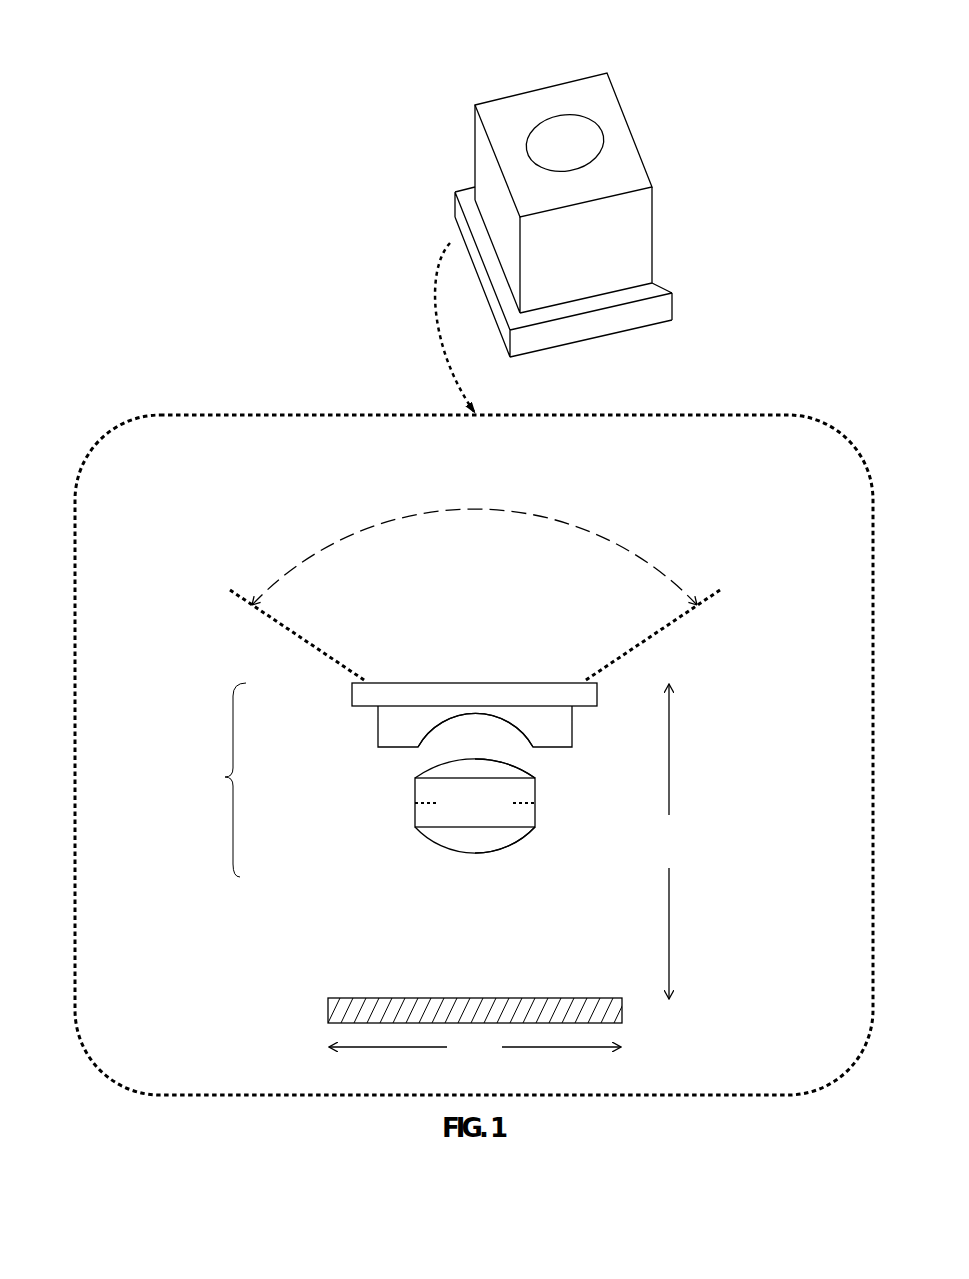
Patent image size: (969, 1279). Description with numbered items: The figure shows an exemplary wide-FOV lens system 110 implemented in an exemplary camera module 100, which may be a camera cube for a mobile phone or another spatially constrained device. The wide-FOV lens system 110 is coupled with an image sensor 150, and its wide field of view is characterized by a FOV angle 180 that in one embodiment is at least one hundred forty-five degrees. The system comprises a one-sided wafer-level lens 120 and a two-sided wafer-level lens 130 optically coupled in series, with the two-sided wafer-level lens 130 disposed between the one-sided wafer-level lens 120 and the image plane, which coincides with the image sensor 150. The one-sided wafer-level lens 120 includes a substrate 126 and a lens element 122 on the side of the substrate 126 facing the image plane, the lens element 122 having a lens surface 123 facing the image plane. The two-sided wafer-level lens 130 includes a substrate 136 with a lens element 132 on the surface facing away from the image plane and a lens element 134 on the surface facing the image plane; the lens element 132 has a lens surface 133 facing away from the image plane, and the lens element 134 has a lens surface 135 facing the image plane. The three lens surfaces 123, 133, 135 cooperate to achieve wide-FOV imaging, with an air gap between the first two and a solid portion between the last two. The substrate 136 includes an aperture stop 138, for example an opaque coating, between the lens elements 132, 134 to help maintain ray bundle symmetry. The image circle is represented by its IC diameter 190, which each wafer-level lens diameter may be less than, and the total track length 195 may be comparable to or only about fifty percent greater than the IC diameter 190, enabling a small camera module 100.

The camera module 100 is at (452, 107).
The wide-FOV lens system 110 is at (225, 777).
The one-sided wafer-level lens 120 is at (428, 716).
The lens element 122 is at (384, 736).
The lens surface 123 is at (500, 720).
The substrate 126 is at (461, 703).
The two-sided wafer-level lens 130 is at (441, 808).
The lens element 132 is at (427, 768).
The lens surface 133 is at (506, 758).
The lens element 134 is at (430, 838).
The lens surface 135 is at (523, 840).
The substrate 136 is at (459, 813).
The aperture stop 138 is at (423, 803).
The image sensor 150 is at (328, 1010).
The FOV angle 180 is at (307, 555).
The IC diameter 190 is at (475, 1048).
The total track length 195 is at (671, 841).